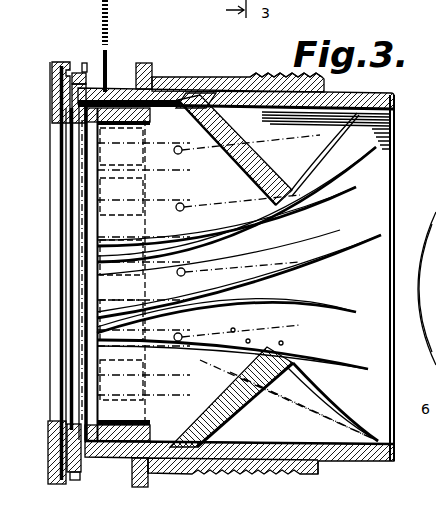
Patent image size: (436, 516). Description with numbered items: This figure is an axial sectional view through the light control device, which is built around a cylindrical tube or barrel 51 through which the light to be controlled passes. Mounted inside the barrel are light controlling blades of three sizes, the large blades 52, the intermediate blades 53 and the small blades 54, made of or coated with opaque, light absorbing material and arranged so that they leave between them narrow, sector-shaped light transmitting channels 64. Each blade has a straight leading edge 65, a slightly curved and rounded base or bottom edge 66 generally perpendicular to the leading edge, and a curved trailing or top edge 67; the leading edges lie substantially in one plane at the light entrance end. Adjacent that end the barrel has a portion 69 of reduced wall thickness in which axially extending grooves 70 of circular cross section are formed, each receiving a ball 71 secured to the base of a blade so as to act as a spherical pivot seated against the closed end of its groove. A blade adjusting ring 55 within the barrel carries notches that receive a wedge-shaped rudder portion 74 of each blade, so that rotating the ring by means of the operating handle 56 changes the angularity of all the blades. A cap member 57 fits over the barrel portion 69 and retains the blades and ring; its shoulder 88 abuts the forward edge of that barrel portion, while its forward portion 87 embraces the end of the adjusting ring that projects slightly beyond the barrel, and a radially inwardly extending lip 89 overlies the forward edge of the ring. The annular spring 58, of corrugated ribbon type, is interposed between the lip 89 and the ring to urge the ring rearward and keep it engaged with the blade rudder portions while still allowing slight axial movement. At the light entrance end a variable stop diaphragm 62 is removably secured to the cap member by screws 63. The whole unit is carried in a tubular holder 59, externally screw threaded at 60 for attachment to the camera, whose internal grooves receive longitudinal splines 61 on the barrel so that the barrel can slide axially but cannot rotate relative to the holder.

The cylindrical tube or barrel 51 is at (396, 97).
The large light controlling blade 52 is at (238, 166).
The intermediate light controlling blade 53 is at (292, 180).
The small light controlling blade 54 is at (251, 137).
The blade adjusting ring 55 is at (107, 441).
The operating handle 56 is at (108, 43).
The cap member 57 is at (156, 89).
The annular spring 58 is at (72, 304).
The tubular holder 59 is at (221, 77).
The external screw thread 60 is at (272, 74).
The longitudinal ribs or splines 61 is at (435, 328).
The variable stop diaphragm 62 is at (52, 68).
The screw 63 is at (80, 70).
The light transmitting channel 64 is at (301, 234).
The leading edge 65 is at (97, 366).
The base or bottom edge 66 is at (341, 461).
The trailing or top edge 67 is at (281, 342).
The barrel portion of reduced wall thickness 69 is at (191, 93).
The axially extending groove 70 is at (150, 477).
The ball pivot 71 is at (180, 473).
The wedge-shaped rudder portion 74 is at (147, 207).
The cap member portion 87 is at (85, 66).
The shoulder 88 is at (109, 88).
The radially inwardly extending lip 89 is at (72, 128).